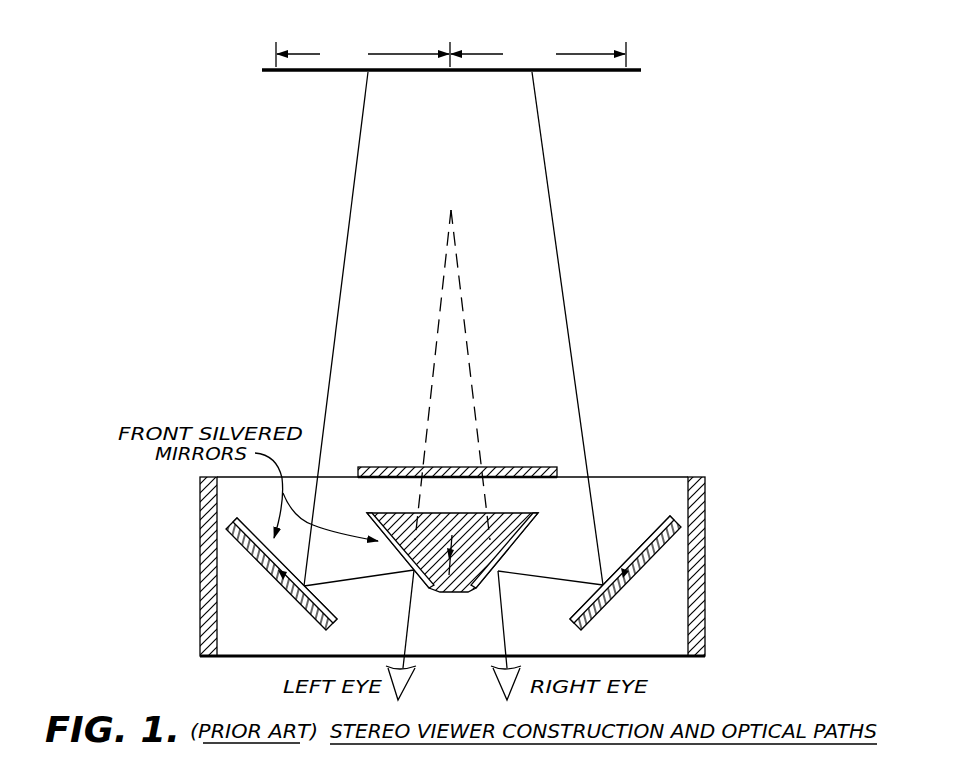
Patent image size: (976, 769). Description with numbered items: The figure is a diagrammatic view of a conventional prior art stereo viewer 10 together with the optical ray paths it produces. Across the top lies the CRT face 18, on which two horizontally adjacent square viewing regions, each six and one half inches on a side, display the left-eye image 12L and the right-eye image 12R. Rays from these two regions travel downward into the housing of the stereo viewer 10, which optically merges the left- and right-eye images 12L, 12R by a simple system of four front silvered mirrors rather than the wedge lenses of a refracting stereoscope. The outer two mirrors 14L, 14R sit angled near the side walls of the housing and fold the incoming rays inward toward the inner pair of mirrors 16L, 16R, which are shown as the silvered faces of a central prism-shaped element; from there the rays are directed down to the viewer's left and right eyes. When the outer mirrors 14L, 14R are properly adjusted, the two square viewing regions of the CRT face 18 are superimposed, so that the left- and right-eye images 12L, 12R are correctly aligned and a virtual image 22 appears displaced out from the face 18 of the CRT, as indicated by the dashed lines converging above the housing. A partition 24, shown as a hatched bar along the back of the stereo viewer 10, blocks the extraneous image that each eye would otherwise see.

The stereo viewer 10 is at (249, 333).
The left-eye image 12L is at (366, 74).
The right-eye image 12R is at (536, 74).
The left outer front silvered mirror 14L is at (333, 608).
The right outer front silvered mirror 14R is at (584, 606).
The left inner front silvered mirror 16L is at (372, 525).
The right inner front silvered mirror 16R is at (524, 531).
The CRT face 18 is at (432, 72).
The virtual image 22 is at (457, 347).
The partition 24 is at (518, 466).